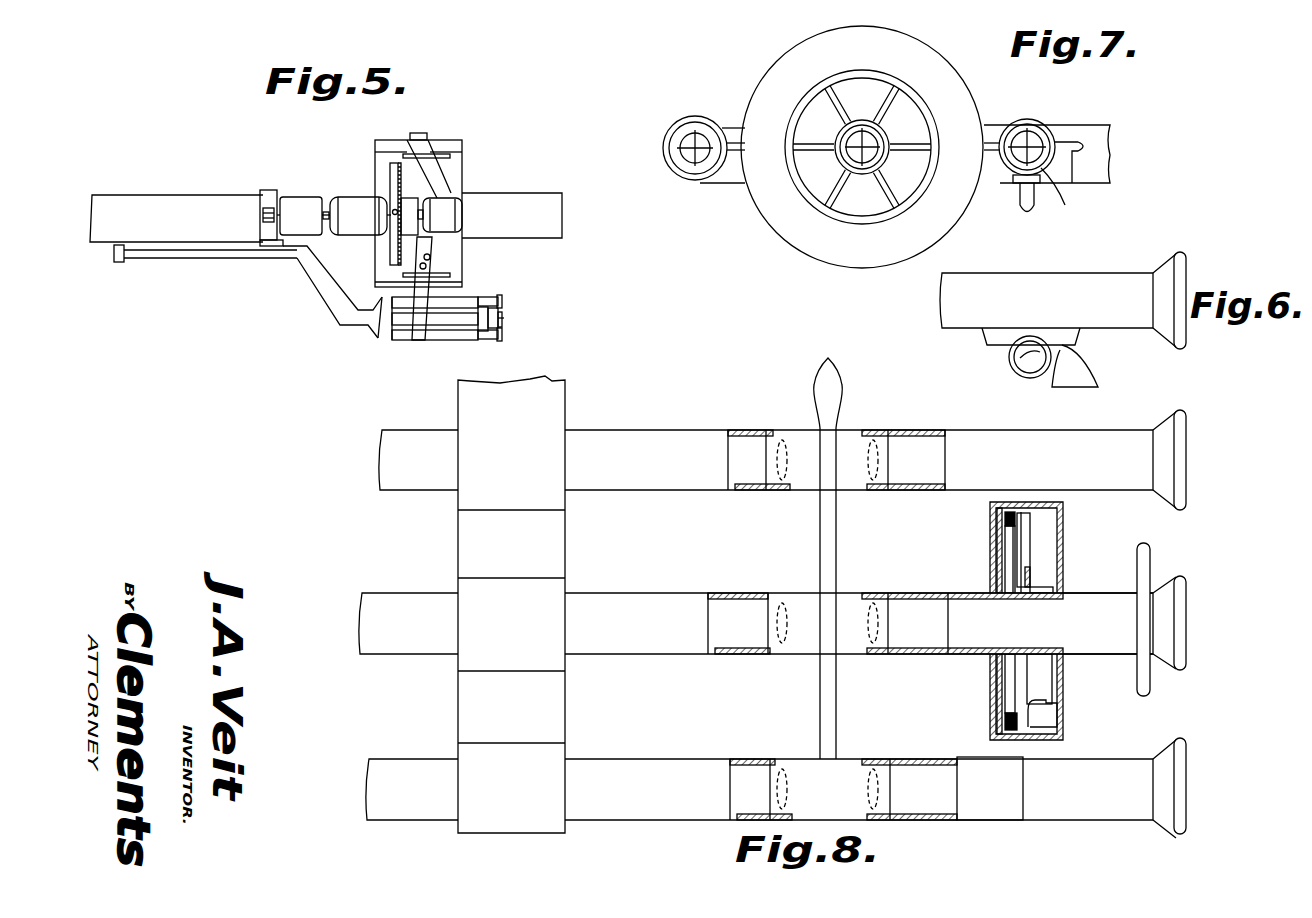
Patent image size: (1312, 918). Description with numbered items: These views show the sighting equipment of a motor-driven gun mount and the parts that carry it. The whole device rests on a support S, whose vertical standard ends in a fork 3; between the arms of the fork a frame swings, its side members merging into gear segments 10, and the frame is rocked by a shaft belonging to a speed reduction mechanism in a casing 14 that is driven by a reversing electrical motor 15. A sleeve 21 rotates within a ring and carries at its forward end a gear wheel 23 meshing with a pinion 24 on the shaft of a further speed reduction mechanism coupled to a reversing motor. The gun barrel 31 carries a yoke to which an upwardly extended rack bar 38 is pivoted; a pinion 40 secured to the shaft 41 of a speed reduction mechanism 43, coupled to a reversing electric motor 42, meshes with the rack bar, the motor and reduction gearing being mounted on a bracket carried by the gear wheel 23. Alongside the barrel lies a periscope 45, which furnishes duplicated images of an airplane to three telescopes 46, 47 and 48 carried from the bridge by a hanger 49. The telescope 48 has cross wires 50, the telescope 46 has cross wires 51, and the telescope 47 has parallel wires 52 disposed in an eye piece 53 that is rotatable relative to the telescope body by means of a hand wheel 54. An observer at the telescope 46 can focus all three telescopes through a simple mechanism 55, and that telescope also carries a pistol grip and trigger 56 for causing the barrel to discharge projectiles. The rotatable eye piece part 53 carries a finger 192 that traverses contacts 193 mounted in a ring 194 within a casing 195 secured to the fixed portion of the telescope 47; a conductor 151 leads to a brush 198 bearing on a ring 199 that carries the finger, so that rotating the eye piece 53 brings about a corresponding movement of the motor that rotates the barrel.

In FIG. 5, the support S is at (462, 140).
In FIG. 5, the fork 3 is at (460, 165).
In FIG. 5, the gear segments 10 is at (440, 152).
In FIG. 5, the casing 14 is at (445, 197).
In FIG. 5, the electrical motor 15 is at (458, 216).
In FIG. 5, the sleeve 21 is at (403, 245).
In FIG. 5, the gear wheel 23 is at (392, 165).
In FIG. 5, the pinion 24 is at (392, 212).
In FIG. 5, the barrel 31 is at (115, 205).
In FIG. 5, the rack bar 38 is at (268, 243).
In FIG. 5, the pinion 40 is at (268, 215).
In FIG. 5, the shaft 41 is at (328, 240).
In FIG. 5, the electric motor 42 is at (355, 197).
In FIG. 5, the speed reduction mechanism 43 is at (302, 206).
In FIG. 5, the periscope 45 is at (185, 259).
In FIG. 5, the telescope 46 is at (470, 298).
In FIG. 7, the telescope 46 is at (1062, 195).
In FIG. 6, the telescope 46 is at (1085, 280).
In FIG. 8, the telescope 46 is at (645, 436).
In FIG. 5, the telescope 47 is at (450, 320).
In FIG. 7, the telescope 47 is at (893, 128).
In FIG. 8, the telescope 47 is at (625, 596).
In FIG. 5, the telescope 48 is at (465, 340).
In FIG. 7, the telescope 48 is at (700, 180).
In FIG. 8, the telescope 48 is at (632, 758).
In FIG. 5, the hanger 49 is at (420, 338).
In FIG. 7, the hanger 49 is at (1110, 136).
In FIG. 8, the hanger 49 is at (548, 390).
In FIG. 7, the cross wires 50 is at (690, 140).
In FIG. 7, the cross wires 51 is at (1030, 140).
In FIG. 7, the parallel wires 52 is at (860, 137).
In FIG. 7, the eye piece 53 is at (867, 172).
In FIG. 8, the eye piece 53 is at (1093, 602).
In FIG. 5, the hand wheel 54 is at (504, 314).
In FIG. 7, the hand wheel 54 is at (800, 52).
In FIG. 8, the hand wheel 54 is at (1150, 556).
In FIG. 7, the focusing mechanism 55 is at (1074, 182).
In FIG. 8, the focusing mechanism 55 is at (834, 372).
In FIG. 7, the pistol grip and trigger 56 is at (1027, 214).
In FIG. 6, the pistol grip and trigger 56 is at (1022, 360).
In FIG. 8, the conductor 151 is at (1062, 724).
In FIG. 8, the finger 192 is at (1035, 540).
In FIG. 8, the contacts 193 is at (1009, 512).
In FIG. 8, the ring 194 is at (1010, 568).
In FIG. 8, the casing 195 is at (998, 522).
In FIG. 8, the brush 198 is at (1045, 677).
In FIG. 8, the ring 199 is at (1015, 658).